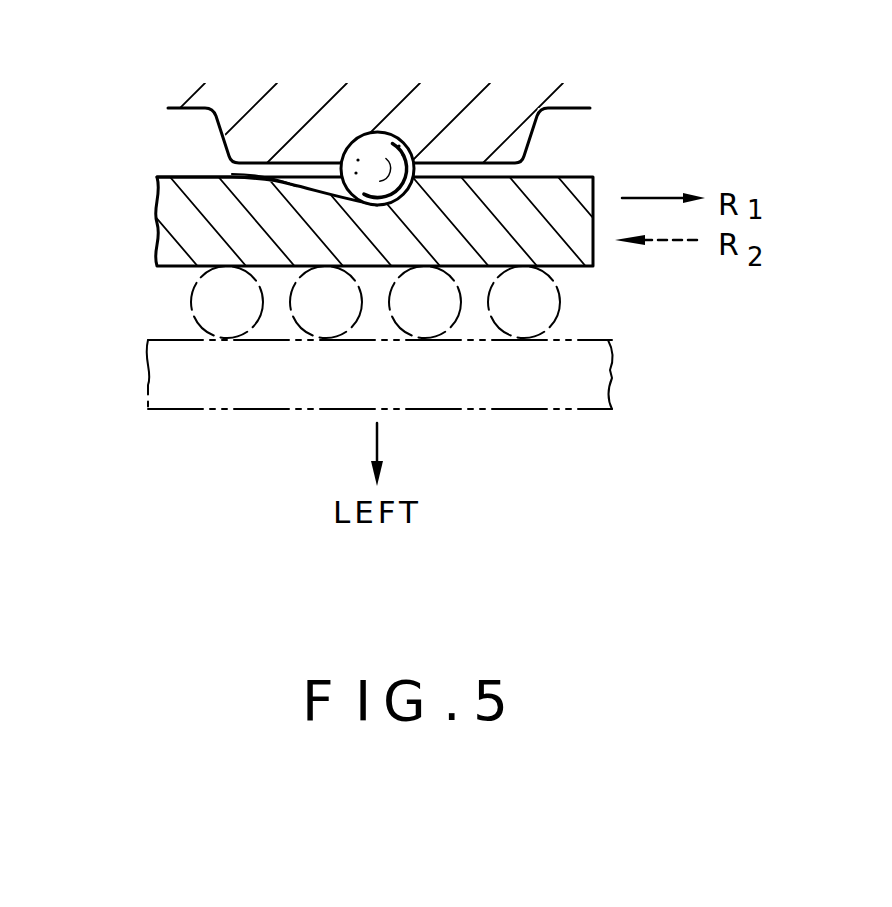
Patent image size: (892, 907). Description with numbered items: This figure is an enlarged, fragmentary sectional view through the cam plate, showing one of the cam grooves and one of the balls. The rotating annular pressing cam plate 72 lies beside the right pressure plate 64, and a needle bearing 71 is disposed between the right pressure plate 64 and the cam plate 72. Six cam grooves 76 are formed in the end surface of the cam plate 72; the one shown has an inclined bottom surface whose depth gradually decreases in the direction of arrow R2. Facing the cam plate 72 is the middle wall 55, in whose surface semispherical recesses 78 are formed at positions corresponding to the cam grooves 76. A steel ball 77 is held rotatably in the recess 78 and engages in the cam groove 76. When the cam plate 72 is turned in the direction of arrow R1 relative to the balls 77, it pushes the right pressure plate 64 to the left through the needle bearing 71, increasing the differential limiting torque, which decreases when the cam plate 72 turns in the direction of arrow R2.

The middle wall 55 is at (248, 92).
The right pressure plate 64 is at (603, 378).
The needle bearing 71 is at (200, 307).
The pressing cam plate 72 is at (187, 218).
The cam groove 76 is at (258, 178).
The ball 77 is at (387, 133).
The semispherical recess 78 is at (353, 135).